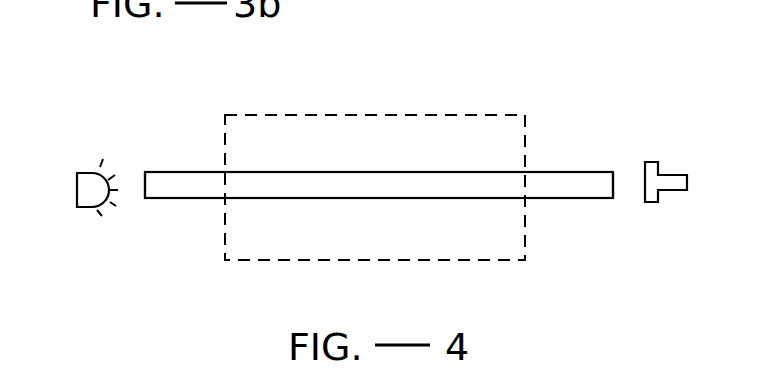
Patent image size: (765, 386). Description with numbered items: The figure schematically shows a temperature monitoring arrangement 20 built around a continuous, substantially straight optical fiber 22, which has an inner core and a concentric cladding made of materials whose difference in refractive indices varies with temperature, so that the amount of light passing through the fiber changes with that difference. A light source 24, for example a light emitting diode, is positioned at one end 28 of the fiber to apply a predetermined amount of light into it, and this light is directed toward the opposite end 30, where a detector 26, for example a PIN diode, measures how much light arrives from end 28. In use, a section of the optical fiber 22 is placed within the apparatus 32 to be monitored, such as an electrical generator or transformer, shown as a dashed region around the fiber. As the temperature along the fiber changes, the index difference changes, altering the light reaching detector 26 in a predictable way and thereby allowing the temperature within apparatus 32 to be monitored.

The temperature monitoring arrangement 20 is at (553, 50).
The optical fiber 22 is at (582, 190).
The light source 24 is at (82, 176).
The detector 26 is at (675, 180).
The end 28 is at (144, 184).
The opposite end 30 is at (618, 178).
The apparatus 32 is at (460, 115).